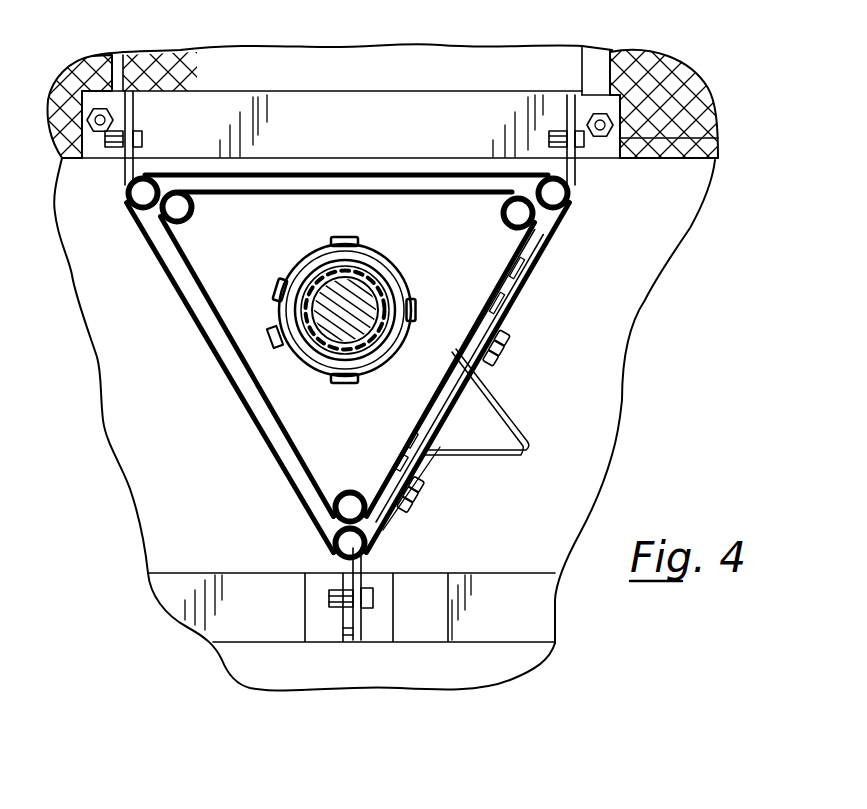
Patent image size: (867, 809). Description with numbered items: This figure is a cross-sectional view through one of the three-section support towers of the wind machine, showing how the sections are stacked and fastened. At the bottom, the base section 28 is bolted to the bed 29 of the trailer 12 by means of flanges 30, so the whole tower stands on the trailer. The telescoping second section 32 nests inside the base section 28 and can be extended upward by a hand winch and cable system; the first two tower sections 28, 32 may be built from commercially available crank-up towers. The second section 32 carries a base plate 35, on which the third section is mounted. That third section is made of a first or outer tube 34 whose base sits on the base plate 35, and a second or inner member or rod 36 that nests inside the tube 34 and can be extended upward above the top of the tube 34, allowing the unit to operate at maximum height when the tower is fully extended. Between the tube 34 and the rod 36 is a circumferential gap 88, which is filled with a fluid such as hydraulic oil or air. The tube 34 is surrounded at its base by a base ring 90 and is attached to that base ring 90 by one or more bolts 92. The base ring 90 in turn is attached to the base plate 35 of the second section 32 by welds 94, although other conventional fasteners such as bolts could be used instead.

The trailer 12 is at (572, 379).
The base section 28 is at (522, 298).
The bed 29 is at (699, 97).
The flanges 30 is at (127, 168).
The telescoping second section 32 is at (534, 243).
The first or outer tube 34 is at (388, 300).
The base plate 35 is at (337, 457).
The second or inner member or rod 36 is at (366, 294).
The circumferential gap 88 is at (380, 337).
The base ring 90 is at (380, 352).
The bolts 92 is at (273, 328).
The welds 94 is at (360, 237).